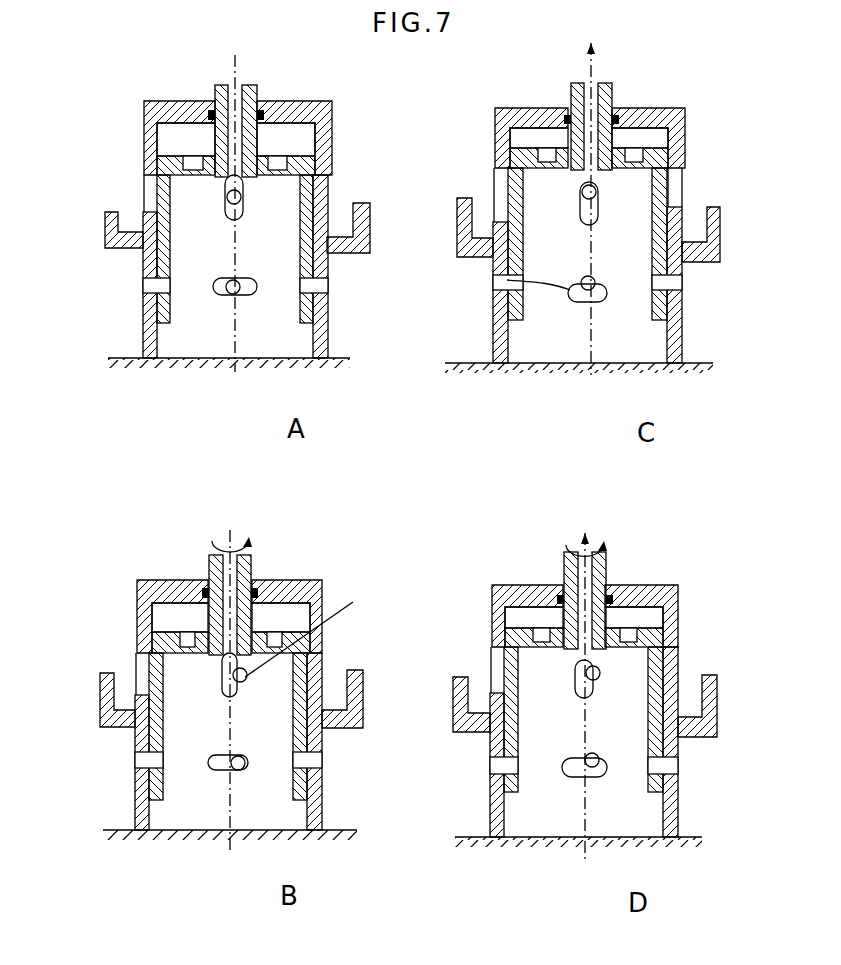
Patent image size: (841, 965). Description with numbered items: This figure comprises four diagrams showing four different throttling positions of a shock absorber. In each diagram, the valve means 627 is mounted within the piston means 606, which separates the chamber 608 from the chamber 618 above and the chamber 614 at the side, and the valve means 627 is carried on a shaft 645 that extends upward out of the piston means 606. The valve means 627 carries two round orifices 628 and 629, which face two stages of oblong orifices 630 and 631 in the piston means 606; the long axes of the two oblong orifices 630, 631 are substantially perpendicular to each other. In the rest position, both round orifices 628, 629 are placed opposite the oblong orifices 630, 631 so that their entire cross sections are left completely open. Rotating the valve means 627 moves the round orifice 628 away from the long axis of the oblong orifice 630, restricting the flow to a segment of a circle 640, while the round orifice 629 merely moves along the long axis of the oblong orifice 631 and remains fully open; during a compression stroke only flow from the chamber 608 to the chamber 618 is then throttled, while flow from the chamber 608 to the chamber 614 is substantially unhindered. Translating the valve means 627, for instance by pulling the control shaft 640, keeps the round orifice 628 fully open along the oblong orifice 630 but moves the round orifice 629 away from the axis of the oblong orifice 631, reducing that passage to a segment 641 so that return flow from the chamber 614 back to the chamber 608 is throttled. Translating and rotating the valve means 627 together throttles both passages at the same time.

The piston means 606 is at (323, 310).
The chamber 608 is at (223, 417).
The chamber 614 is at (121, 320).
The chamber 618 is at (337, 85).
The valve means 627 is at (305, 320).
The round orifice 628 is at (243, 198).
The round orifice 629 is at (245, 291).
The oblong orifice 630 is at (224, 208).
The oblong orifice 631 is at (221, 296).
The segment of a circle 640 is at (326, 630).
The segment 641 is at (507, 280).
The shaft 645 is at (215, 92).